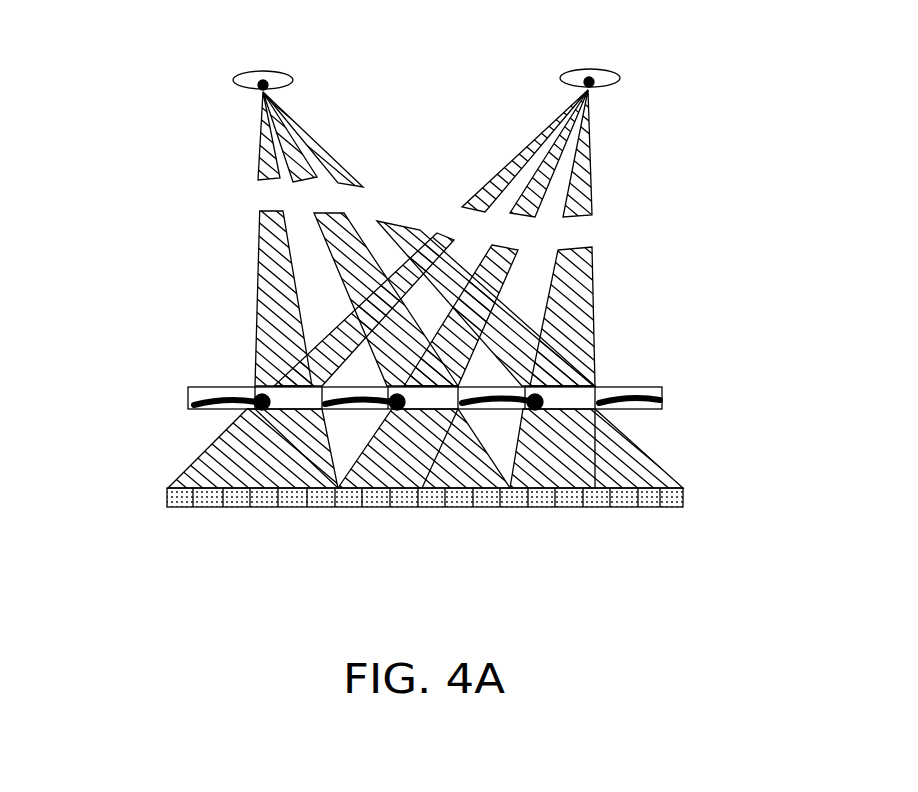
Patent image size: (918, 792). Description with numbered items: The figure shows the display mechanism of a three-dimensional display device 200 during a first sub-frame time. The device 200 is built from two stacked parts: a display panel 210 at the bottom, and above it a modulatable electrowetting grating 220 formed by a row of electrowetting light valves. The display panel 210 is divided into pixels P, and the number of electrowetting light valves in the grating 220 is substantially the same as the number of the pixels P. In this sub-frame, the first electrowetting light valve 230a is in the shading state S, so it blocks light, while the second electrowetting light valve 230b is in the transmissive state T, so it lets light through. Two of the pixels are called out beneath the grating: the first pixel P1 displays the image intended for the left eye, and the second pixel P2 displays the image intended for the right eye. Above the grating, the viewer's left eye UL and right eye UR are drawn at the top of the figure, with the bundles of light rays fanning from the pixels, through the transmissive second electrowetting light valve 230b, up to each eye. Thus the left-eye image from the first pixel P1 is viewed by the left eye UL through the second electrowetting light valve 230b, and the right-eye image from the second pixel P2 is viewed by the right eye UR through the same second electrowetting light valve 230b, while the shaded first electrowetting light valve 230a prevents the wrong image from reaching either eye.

The three-dimensional display device 200 is at (793, 397).
The display panel 210 is at (683, 497).
The modulatable electrowetting grating 220 is at (663, 393).
The first electrowetting light valve 230a is at (211, 415).
The second electrowetting light valve 230b is at (274, 416).
The first pixel P1 is at (250, 514).
The second pixel P2 is at (338, 514).
The pixels P is at (685, 511).
The right eye UR is at (459, 259).
The left eye UL is at (459, 259).